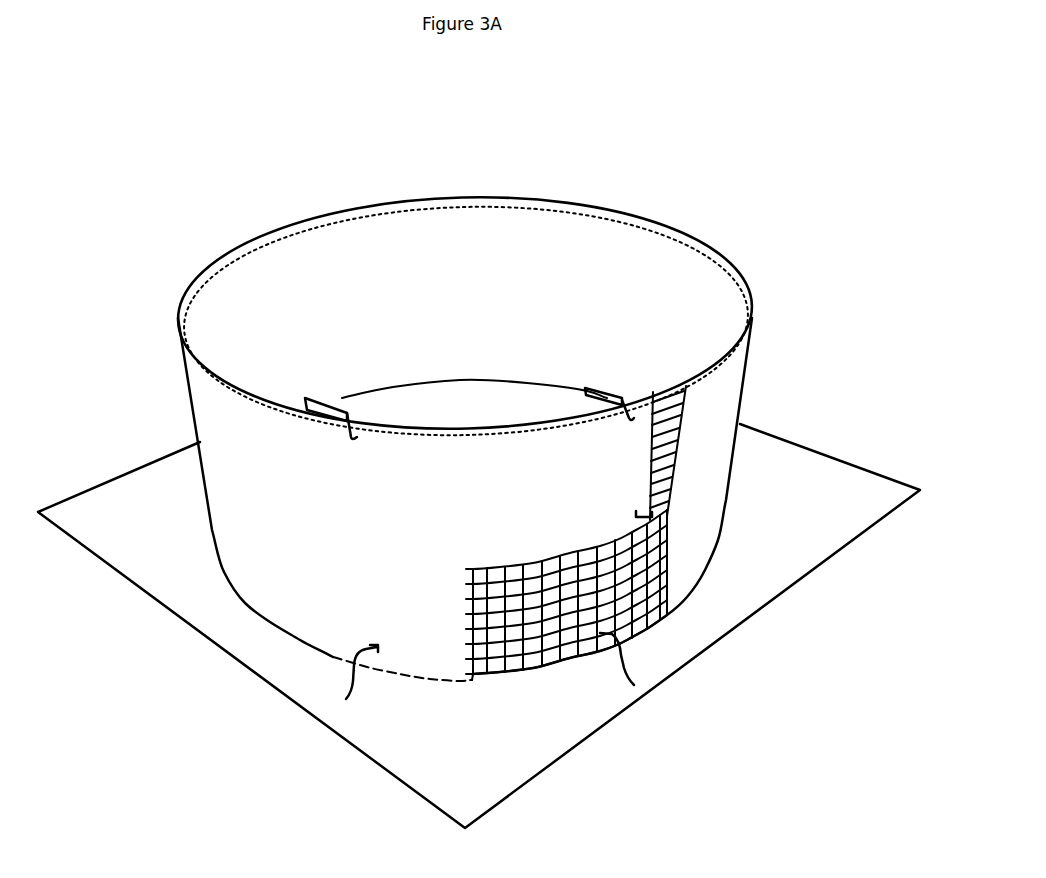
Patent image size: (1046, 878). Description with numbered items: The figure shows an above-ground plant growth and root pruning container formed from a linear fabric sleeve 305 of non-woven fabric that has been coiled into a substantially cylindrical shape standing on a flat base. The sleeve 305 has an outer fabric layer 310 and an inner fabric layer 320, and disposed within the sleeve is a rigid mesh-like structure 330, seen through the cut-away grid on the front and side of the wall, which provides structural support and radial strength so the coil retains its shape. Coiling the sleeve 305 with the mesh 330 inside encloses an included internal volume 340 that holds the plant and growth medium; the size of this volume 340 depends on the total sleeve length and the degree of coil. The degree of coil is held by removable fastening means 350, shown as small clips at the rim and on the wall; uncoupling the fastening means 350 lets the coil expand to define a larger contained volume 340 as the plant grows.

The linear fabric sleeve 305 is at (550, 193).
The outer fabric layer 310 is at (228, 388).
The inner fabric layer 320 is at (243, 296).
The rigid mesh-like structure 330 is at (645, 578).
The included internal volume 340 is at (402, 270).
The removable fastening means 350 is at (382, 407).